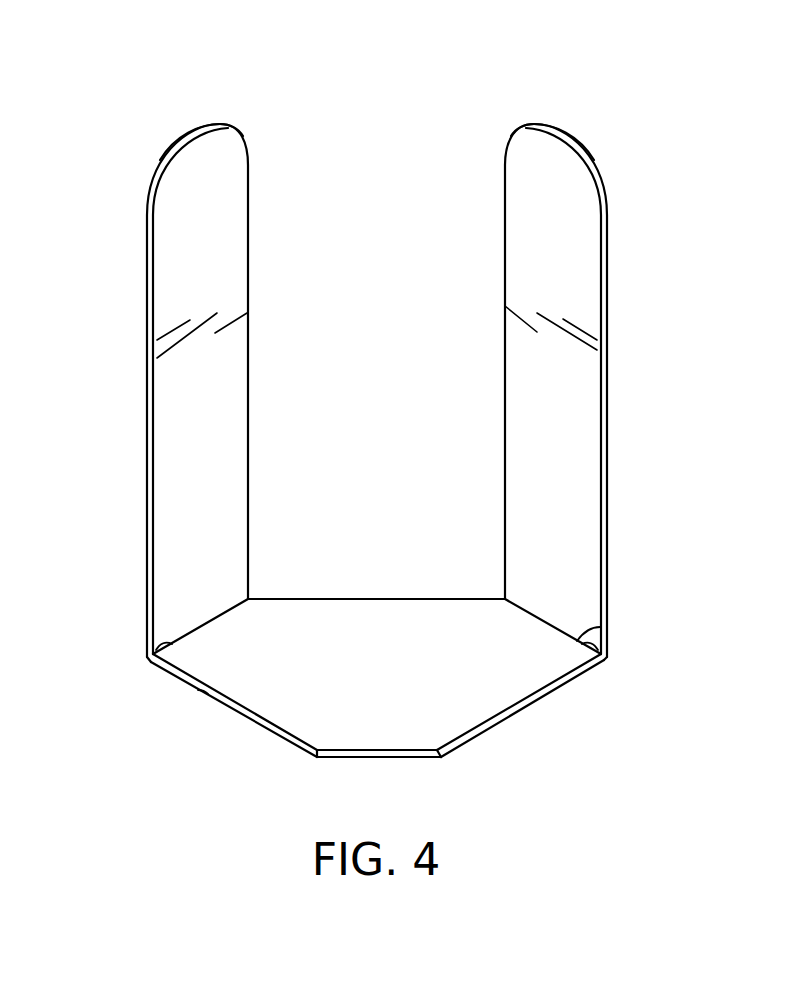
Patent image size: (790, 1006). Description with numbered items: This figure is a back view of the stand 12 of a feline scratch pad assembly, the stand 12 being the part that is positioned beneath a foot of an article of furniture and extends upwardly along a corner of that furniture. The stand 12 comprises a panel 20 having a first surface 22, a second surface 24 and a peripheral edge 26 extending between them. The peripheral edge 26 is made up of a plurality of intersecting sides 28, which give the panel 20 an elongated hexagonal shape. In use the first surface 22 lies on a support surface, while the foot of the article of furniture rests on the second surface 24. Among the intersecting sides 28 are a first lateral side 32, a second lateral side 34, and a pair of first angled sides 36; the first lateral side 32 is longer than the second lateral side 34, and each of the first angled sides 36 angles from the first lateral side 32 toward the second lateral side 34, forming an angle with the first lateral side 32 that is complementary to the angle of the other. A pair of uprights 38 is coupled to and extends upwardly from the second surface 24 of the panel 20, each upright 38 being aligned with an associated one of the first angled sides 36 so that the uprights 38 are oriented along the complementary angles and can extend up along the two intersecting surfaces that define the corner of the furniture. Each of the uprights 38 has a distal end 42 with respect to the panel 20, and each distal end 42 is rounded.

The stand 12 is at (372, 414).
The panel 20 is at (372, 652).
The first surface 22 is at (379, 789).
The second surface 24 is at (317, 711).
The peripheral edge 26 is at (508, 714).
The intersecting sides 28 is at (304, 598).
The first lateral side 32 is at (428, 598).
The second lateral side 34 is at (352, 758).
The first angled sides 36 is at (168, 645).
The uprights 38 is at (376, 348).
The distal end 42 is at (188, 135).